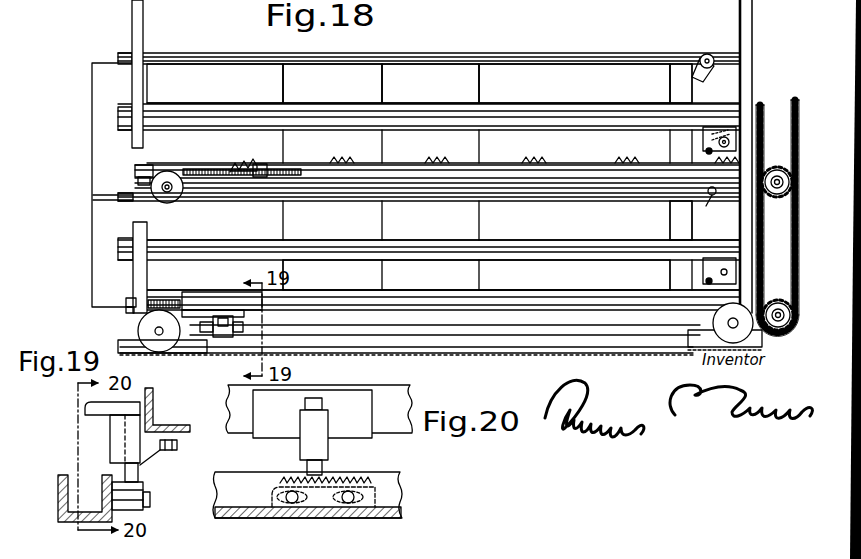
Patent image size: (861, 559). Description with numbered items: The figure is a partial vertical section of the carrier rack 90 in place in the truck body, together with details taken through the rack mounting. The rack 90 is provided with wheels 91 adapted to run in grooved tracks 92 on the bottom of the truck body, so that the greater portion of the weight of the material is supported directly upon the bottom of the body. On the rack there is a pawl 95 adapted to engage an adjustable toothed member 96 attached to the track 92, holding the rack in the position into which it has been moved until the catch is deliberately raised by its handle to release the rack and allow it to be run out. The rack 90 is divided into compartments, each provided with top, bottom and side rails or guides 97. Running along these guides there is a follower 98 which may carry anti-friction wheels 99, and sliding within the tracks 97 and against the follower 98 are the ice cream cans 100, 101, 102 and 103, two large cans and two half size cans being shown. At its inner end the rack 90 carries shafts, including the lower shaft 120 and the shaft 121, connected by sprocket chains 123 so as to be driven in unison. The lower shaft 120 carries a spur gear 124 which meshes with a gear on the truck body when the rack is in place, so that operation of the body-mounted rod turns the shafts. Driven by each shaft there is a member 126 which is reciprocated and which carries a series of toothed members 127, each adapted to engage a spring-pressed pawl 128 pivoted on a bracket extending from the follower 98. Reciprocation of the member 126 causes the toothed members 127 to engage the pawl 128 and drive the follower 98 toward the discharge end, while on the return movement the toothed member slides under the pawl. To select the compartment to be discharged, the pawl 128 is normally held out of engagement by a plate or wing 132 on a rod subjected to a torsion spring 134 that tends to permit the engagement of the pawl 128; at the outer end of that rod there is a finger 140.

In FIG. 18, the rack 90 is at (744, 43).
In FIG. 18, the wheels 91 is at (140, 329).
In FIG. 18, the grooved tracks 92 is at (458, 338).
In FIG. 19, the grooved tracks 92 is at (63, 475).
In FIG. 20, the grooved tracks 92 is at (275, 485).
In FIG. 20, the pawl 95 is at (318, 479).
In FIG. 18, the adjustable toothed member 96 is at (222, 316).
In FIG. 19, the adjustable toothed member 96 is at (92, 408).
In FIG. 20, the adjustable toothed member 96 is at (314, 398).
In FIG. 18, the rails or guides 97 is at (609, 52).
In FIG. 18, the follower 98 is at (680, 77).
In FIG. 18, the anti-friction wheels 99 is at (714, 61).
In FIG. 18, the ice cream can 100 is at (527, 66).
In FIG. 18, the ice cream can 101 is at (426, 68).
In FIG. 18, the ice cream can 102 is at (347, 72).
In FIG. 18, the ice cream can 103 is at (195, 75).
In FIG. 18, the lower shaft 120 is at (782, 340).
In FIG. 18, the shaft 121 is at (777, 165).
In FIG. 18, the sprocket chains 123 is at (790, 108).
In FIG. 18, the spur gear 124 is at (778, 300).
In FIG. 18, the reciprocating member 126 is at (210, 159).
In FIG. 18, the toothed members 127 is at (250, 160).
In FIG. 18, the pawl 128 is at (703, 141).
In FIG. 18, the plate or wing 132 is at (553, 293).
In FIG. 18, the torsion spring 134 is at (170, 304).
In FIG. 18, the finger 140 is at (127, 299).